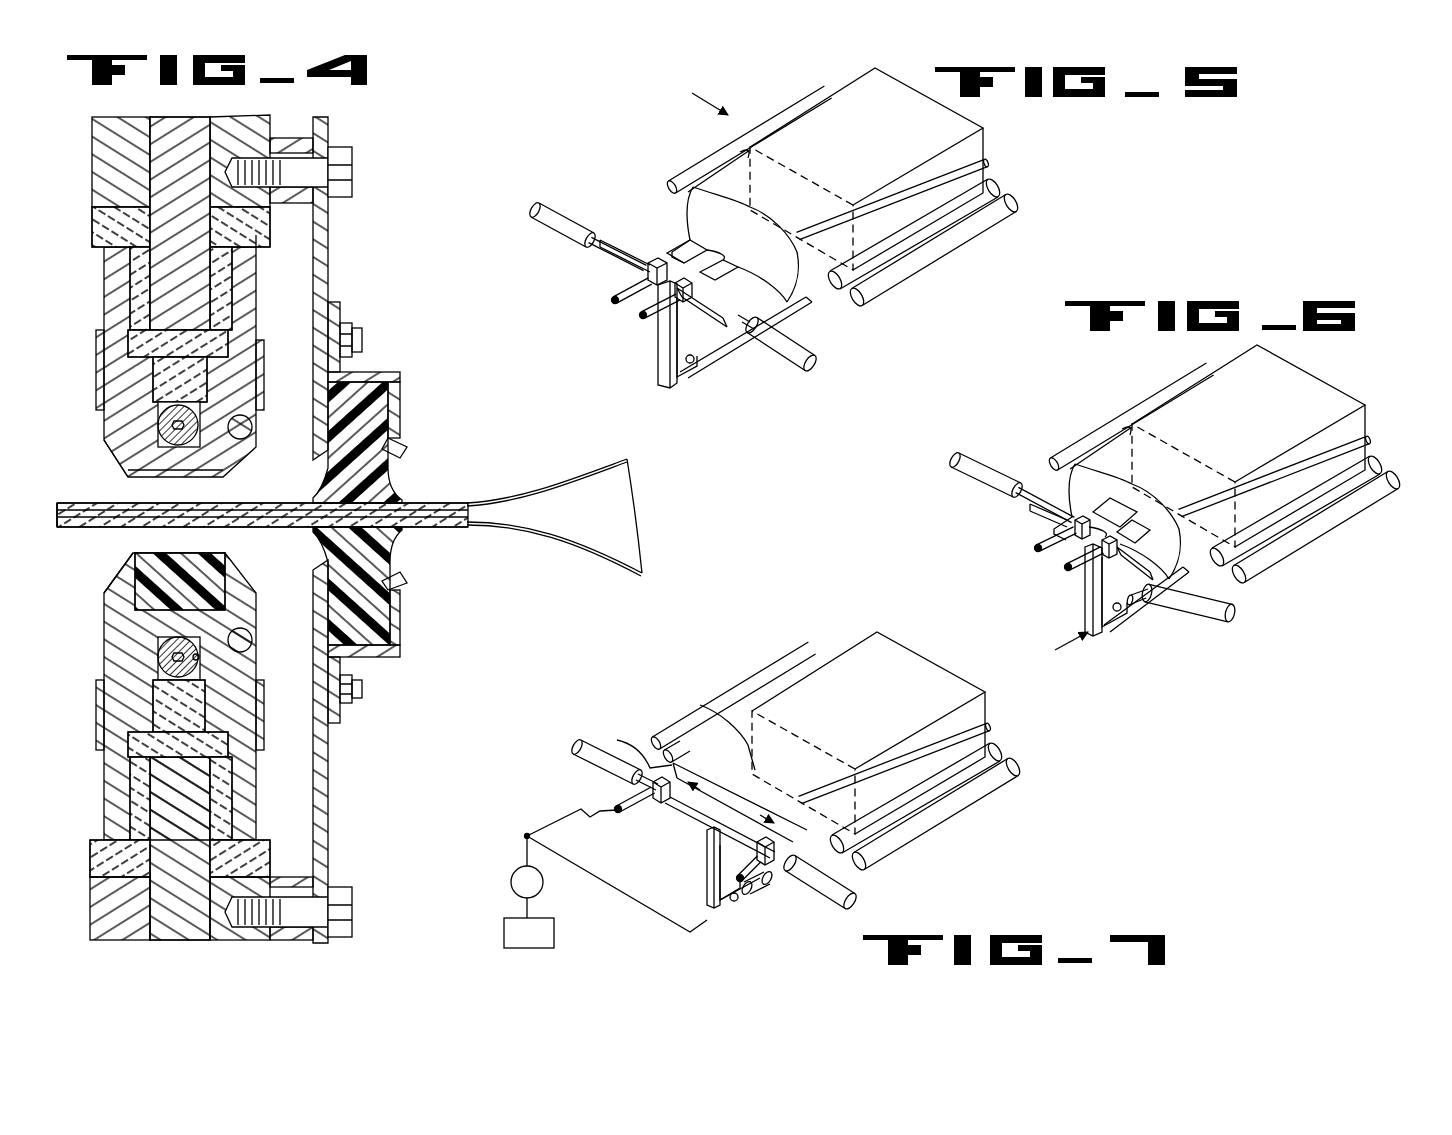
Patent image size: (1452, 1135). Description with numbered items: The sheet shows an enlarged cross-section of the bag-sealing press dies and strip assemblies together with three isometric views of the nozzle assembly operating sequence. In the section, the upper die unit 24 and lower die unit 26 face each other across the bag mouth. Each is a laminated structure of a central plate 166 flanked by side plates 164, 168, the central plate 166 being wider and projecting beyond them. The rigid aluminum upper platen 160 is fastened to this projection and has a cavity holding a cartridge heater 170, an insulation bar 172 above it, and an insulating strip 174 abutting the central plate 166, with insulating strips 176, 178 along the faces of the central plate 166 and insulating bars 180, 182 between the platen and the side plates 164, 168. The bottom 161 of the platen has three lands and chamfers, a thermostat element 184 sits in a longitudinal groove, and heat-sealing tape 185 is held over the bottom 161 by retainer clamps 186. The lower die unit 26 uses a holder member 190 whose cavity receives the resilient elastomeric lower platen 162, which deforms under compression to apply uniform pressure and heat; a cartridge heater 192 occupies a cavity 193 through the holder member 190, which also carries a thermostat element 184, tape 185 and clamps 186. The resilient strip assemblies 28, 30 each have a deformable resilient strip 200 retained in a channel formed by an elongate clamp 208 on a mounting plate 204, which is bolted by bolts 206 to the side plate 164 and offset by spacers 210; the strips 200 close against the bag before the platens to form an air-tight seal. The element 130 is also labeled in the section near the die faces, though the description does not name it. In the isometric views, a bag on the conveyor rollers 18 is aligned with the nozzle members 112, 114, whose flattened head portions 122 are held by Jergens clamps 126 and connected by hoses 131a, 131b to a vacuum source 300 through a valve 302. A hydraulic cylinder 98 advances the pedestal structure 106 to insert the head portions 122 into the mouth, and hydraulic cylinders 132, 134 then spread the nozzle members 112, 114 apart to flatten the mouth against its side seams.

In FIG. 4, the upper die unit 24 is at (100, 318).
In FIG. 4, the lower die unit 26 is at (100, 760).
In FIG. 4, the resilient strip assembly 28 is at (404, 370).
In FIG. 4, the resilient strip assembly 30 is at (406, 658).
In FIG. 5, the rollers 18 is at (700, 160).
In FIG. 6, the rollers 18 is at (1205, 368).
In FIG. 7, the rollers 18 is at (812, 652).
In FIG. 5, the hydraulic cylinder 98 is at (812, 312).
In FIG. 6, the hydraulic cylinder 98 is at (1153, 600).
In FIG. 7, the hydraulic cylinder 98 is at (770, 893).
In FIG. 5, the pedestal structure 106 is at (660, 352).
In FIG. 6, the pedestal structure 106 is at (1084, 587).
In FIG. 7, the pedestal structure 106 is at (706, 889).
In FIG. 5, the nozzle member 112 is at (684, 248).
In FIG. 6, the nozzle member 112 is at (1112, 495).
In FIG. 7, the nozzle member 112 is at (622, 760).
In FIG. 4, the nozzle member 114 is at (112, 525).
In FIG. 5, the nozzle member 114 is at (722, 272).
In FIG. 6, the nozzle member 114 is at (1150, 525).
In FIG. 7, the nozzle member 114 is at (786, 880).
In FIG. 4, the head portion 122 is at (278, 500).
In FIG. 5, the Jergens clamp 126 is at (630, 275).
In FIG. 6, the Jergens clamp 126 is at (1052, 524).
In FIG. 7, the Jergens clamp 126 is at (652, 812).
In FIG. 4, the lower die face 130 is at (310, 530).
In FIG. 5, the hose 131a is at (616, 297).
In FIG. 6, the hose 131a is at (1036, 546).
In FIG. 7, the hose 131a is at (616, 814).
In FIG. 5, the hose 131b is at (640, 316).
In FIG. 6, the hose 131b is at (1066, 566).
In FIG. 7, the hose 131b is at (738, 876).
In FIG. 5, the hydraulic cylinder 132 is at (552, 210).
In FIG. 6, the hydraulic cylinder 132 is at (962, 455).
In FIG. 7, the hydraulic cylinder 132 is at (604, 778).
In FIG. 5, the hydraulic cylinder 134 is at (812, 366).
In FIG. 6, the hydraulic cylinder 134 is at (1236, 615).
In FIG. 7, the hydraulic cylinder 134 is at (856, 900).
In FIG. 4, the upper platen 160 is at (232, 455).
In FIG. 4, the bottom 161 is at (170, 466).
In FIG. 4, the lower platen 162 is at (214, 548).
In FIG. 4, the side plate 164 is at (245, 118).
In FIG. 4, the central plate 166 is at (175, 122).
In FIG. 4, the side plate 168 is at (113, 120).
In FIG. 4, the cartridge heater 170 is at (160, 423).
In FIG. 4, the insulation bar 172 is at (155, 363).
In FIG. 4, the strip of insulating material 174 is at (225, 332).
In FIG. 4, the insulating strip 176 is at (138, 268).
In FIG. 4, the insulating strip 178 is at (228, 279).
In FIG. 4, the insulating bar 180 is at (98, 228).
In FIG. 4, the insulating bar 182 is at (266, 233).
In FIG. 4, the thermostat element 184 is at (252, 426).
In FIG. 4, the heat-sealing tape 185 is at (106, 445).
In FIG. 4, the retainer clamps 186 is at (98, 340).
In FIG. 4, the holder member 190 is at (108, 606).
In FIG. 4, the cartridge heater 192 is at (160, 655).
In FIG. 4, the cavity 193 is at (200, 658).
In FIG. 4, the resilient strip 200 is at (380, 392).
In FIG. 4, the mounting plate 204 is at (326, 266).
In FIG. 4, the bolts 206 is at (354, 162).
In FIG. 4, the clamp 208 is at (398, 413).
In FIG. 4, the spacers 210 is at (300, 142).
In FIG. 7, the vacuum source 300 is at (556, 926).
In FIG. 7, the valve 302 is at (545, 892).